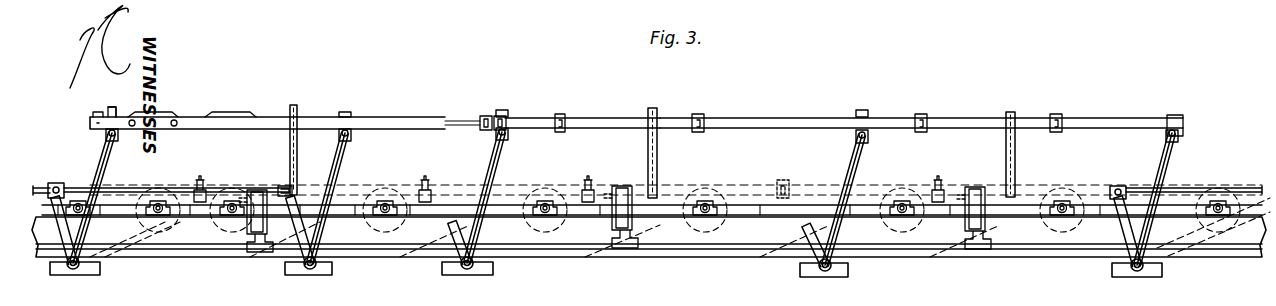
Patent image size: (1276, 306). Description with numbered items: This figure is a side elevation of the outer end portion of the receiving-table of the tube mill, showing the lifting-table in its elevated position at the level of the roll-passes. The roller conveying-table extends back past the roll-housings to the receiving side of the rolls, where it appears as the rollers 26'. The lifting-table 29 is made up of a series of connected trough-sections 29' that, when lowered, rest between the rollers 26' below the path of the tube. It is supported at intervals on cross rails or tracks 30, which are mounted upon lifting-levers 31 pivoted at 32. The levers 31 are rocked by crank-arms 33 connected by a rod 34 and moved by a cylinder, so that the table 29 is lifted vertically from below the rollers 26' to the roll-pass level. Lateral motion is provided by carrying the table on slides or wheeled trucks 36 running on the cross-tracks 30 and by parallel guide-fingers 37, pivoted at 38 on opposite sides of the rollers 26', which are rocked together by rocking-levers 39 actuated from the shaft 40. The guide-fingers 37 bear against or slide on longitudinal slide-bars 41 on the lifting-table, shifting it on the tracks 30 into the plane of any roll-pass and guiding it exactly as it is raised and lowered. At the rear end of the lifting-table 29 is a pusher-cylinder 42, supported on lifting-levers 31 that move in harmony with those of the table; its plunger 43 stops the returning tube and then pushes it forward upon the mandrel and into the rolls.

The conveying-table rollers on receiving side 26' is at (688, 197).
The lifting-table 29 is at (267, 133).
The trough-sections 29' is at (165, 136).
The cross rails or tracks 30 is at (118, 137).
The lifting-levers 31 is at (105, 171).
The pivot 32 is at (308, 271).
The crank-arms 33 is at (62, 174).
The rod 34 is at (198, 190).
The slides or wheeled trucks 36 is at (868, 150).
The guide-fingers 37 is at (290, 153).
The pivot of guide-fingers 38 is at (282, 185).
The rocking-levers 39 is at (265, 234).
The shaft 40 is at (417, 248).
The longitudinal slide-bars 41 is at (612, 128).
The pusher-cylinder 42 is at (763, 112).
The plunger 43 is at (466, 112).